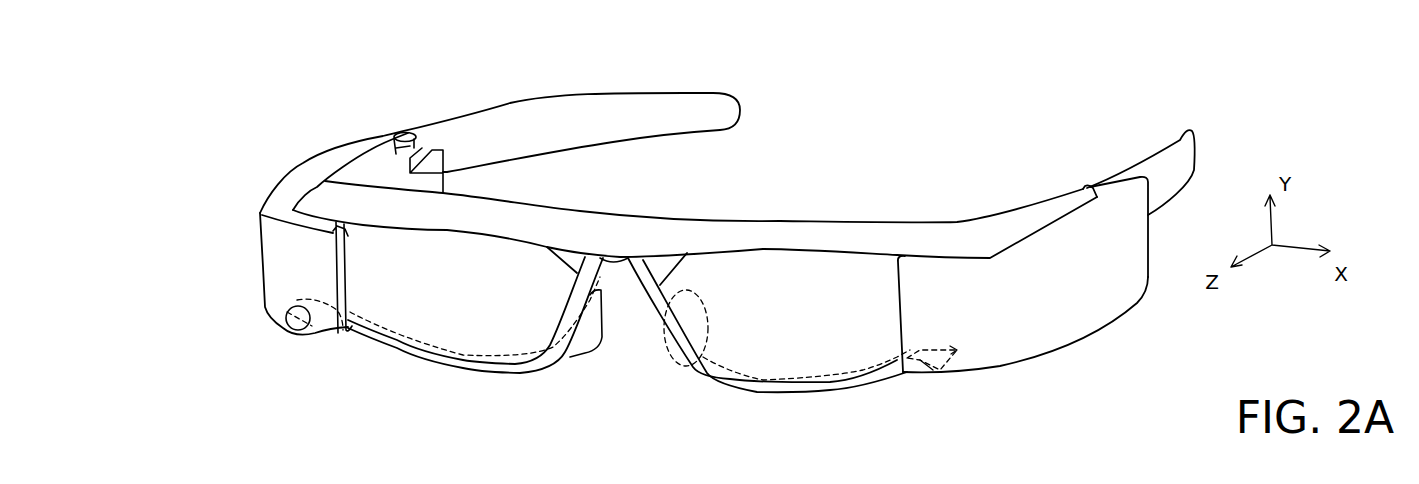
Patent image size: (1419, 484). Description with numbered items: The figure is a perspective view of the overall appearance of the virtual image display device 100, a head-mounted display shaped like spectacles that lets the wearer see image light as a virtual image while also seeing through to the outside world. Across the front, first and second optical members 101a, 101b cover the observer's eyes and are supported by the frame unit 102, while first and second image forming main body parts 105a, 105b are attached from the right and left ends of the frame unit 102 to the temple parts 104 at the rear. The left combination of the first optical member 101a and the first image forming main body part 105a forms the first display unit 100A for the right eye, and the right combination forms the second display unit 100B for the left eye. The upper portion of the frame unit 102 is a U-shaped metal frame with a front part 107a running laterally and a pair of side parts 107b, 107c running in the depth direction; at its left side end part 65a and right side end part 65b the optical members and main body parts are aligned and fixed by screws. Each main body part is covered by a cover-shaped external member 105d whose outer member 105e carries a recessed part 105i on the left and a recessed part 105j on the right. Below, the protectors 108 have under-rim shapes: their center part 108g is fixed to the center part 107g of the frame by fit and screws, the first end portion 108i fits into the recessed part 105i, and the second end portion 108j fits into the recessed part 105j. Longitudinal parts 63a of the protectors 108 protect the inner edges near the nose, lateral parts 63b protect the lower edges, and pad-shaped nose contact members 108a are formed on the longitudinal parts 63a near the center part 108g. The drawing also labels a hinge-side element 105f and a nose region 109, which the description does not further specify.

The virtual image display device 100 is at (980, 143).
The first display unit 100A is at (297, 158).
The second display unit 100B is at (1023, 385).
The frame unit 102 is at (817, 210).
The temple part 104 is at (498, 130).
The first image forming main body part 105a is at (287, 192).
The second image forming main body part 105b is at (1033, 323).
The external member 105d is at (263, 278).
The outer member 105e is at (280, 252).
The hinge block 105f is at (450, 178).
The recessed part 105i is at (337, 337).
The recessed part 105j is at (925, 362).
The front part 107a is at (685, 230).
The side part 107b is at (353, 160).
The side part 107c is at (1030, 220).
The center part 107g is at (613, 227).
The protector 108 is at (395, 360).
The nose contact member 108a is at (585, 347).
The center part 108g is at (613, 263).
The first end portion 108i is at (287, 333).
The second end portion 108j is at (940, 363).
The longitudinal part 63a is at (573, 303).
The lateral part 63b is at (435, 363).
The side end part 65a is at (318, 197).
The side end part 65b is at (955, 233).
The first optical member 101a is at (485, 327).
The second optical member 101b is at (740, 343).
The nose portion 109 is at (538, 392).